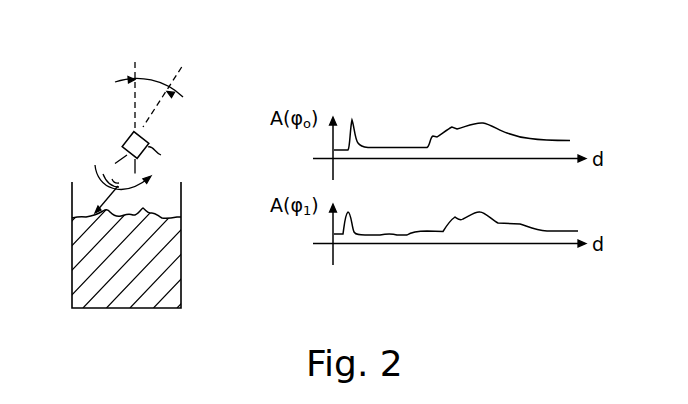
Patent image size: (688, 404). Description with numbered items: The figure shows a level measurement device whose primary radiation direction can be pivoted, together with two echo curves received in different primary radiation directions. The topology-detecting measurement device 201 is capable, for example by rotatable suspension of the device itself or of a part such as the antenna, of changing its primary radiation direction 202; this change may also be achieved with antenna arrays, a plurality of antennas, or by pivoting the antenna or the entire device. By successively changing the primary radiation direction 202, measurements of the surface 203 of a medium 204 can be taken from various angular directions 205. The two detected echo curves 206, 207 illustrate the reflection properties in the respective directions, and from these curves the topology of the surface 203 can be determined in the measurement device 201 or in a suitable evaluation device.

The topology-detecting measurement device 201 is at (128, 138).
The primary radiation direction 202 is at (95, 213).
The surface 203 is at (175, 219).
The medium 204 is at (173, 275).
The angular directions 205 is at (172, 64).
The echo curve 206 is at (548, 141).
The echo curve 207 is at (548, 230).